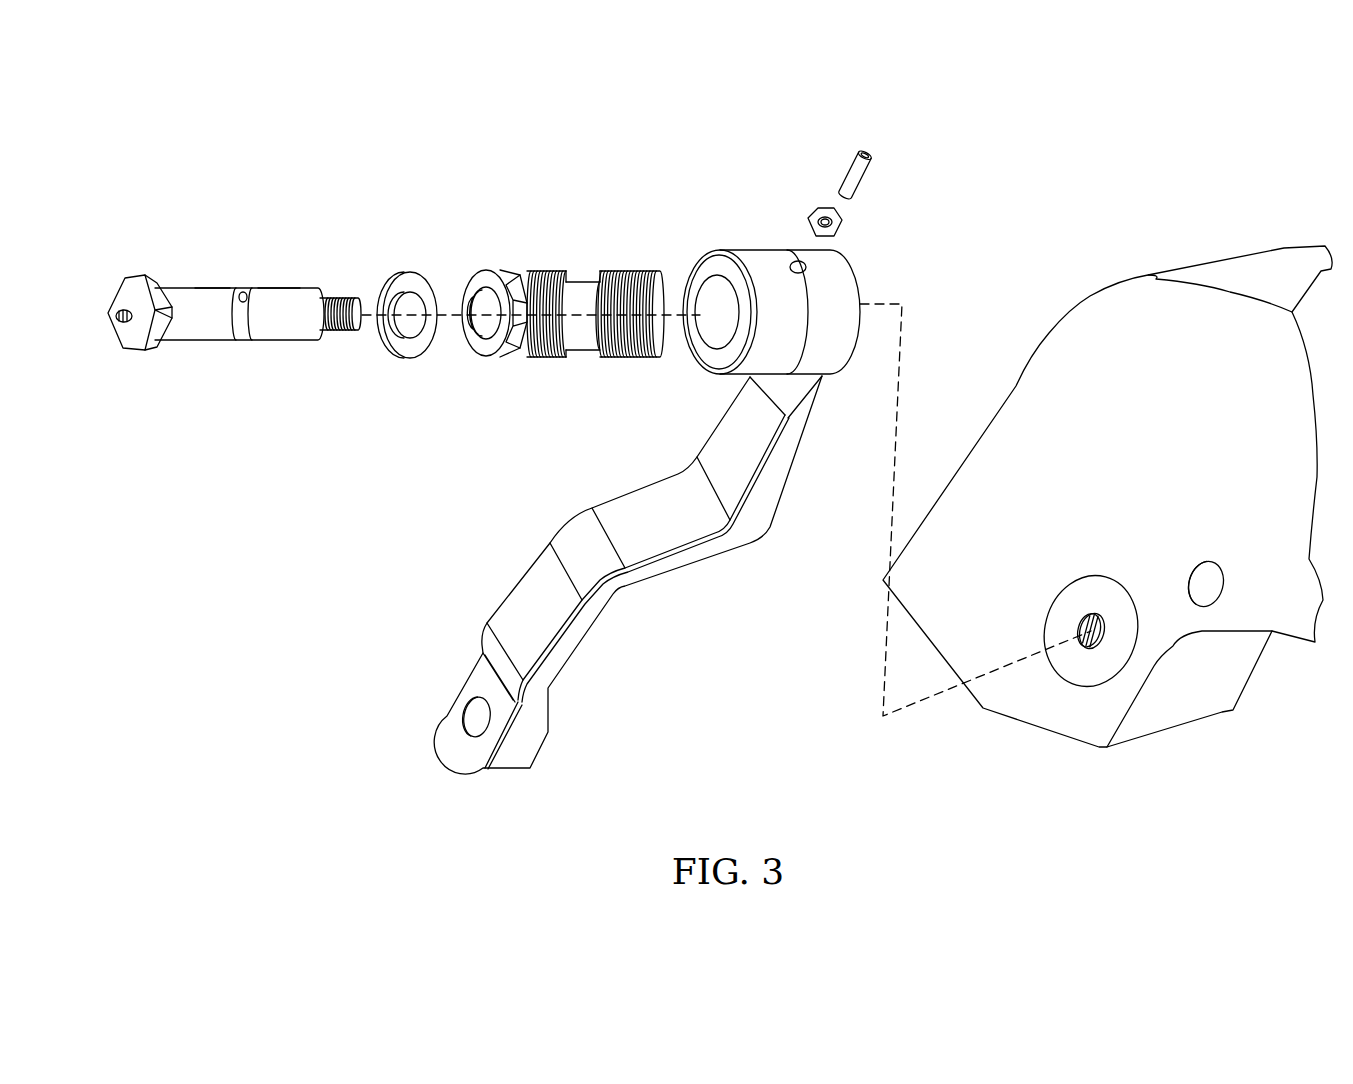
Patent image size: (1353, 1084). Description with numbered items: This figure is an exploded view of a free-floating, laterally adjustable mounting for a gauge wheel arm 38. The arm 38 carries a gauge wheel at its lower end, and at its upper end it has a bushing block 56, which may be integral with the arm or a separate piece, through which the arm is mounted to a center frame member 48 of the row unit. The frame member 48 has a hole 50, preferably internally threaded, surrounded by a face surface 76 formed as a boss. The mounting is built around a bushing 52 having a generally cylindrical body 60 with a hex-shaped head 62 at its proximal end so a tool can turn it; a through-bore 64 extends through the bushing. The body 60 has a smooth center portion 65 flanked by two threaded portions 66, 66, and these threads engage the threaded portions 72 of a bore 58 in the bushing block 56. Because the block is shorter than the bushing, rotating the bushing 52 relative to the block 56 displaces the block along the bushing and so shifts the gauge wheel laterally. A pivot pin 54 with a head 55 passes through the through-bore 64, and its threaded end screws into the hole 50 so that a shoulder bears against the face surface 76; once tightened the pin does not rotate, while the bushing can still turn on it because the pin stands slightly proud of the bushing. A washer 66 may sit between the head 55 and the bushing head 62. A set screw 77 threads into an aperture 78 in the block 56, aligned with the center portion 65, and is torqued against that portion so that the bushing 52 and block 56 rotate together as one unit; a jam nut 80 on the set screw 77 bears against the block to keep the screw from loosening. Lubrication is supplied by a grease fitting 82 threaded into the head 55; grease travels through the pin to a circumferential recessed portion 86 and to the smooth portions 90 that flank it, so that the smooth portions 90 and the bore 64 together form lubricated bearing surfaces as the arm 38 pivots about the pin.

The gauge wheel arm 38 is at (638, 636).
The center frame member 48 is at (1016, 395).
The hole 50 is at (242, 293).
The bushing 52 is at (568, 285).
The pivot pin 54 is at (290, 318).
The head 55 is at (148, 276).
The bushing block 56 is at (838, 270).
The bore 58 is at (720, 282).
The cylindrical body 60 is at (582, 332).
The head 62 is at (506, 272).
The through-bore 64 is at (478, 312).
The smooth center portion 65 is at (590, 296).
The threaded portion 66 is at (402, 273).
The threaded portion 72 is at (712, 318).
The face surface 76 is at (1083, 596).
The set screw 77 is at (850, 176).
The aperture 78 is at (796, 262).
The jam nut 80 is at (822, 207).
The grease fitting 82 is at (116, 316).
The circumferential recessed portion 86 is at (241, 336).
The smooth portions 90 is at (196, 288).